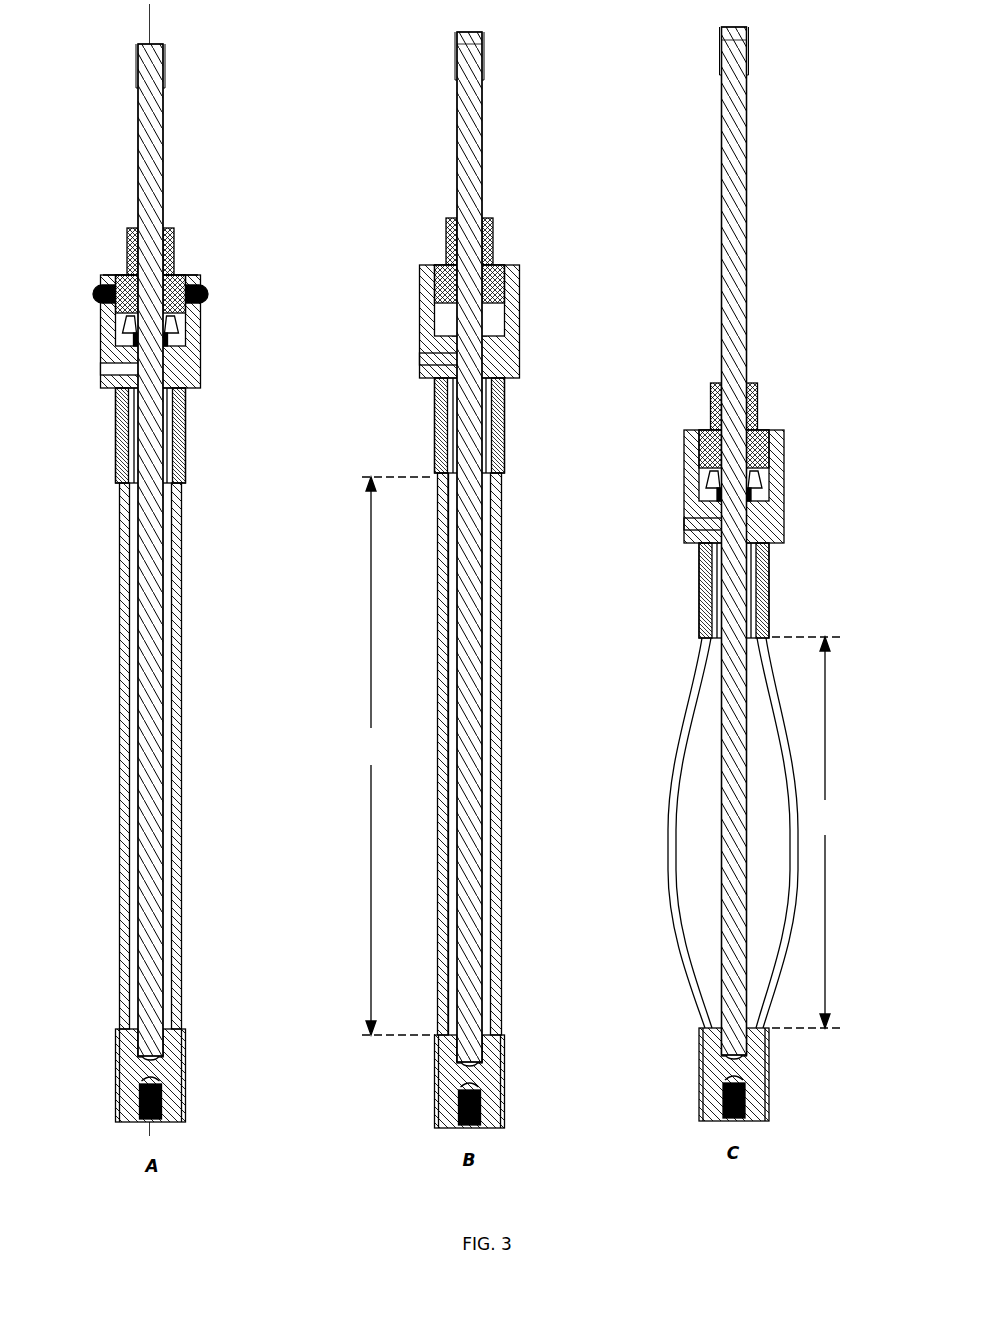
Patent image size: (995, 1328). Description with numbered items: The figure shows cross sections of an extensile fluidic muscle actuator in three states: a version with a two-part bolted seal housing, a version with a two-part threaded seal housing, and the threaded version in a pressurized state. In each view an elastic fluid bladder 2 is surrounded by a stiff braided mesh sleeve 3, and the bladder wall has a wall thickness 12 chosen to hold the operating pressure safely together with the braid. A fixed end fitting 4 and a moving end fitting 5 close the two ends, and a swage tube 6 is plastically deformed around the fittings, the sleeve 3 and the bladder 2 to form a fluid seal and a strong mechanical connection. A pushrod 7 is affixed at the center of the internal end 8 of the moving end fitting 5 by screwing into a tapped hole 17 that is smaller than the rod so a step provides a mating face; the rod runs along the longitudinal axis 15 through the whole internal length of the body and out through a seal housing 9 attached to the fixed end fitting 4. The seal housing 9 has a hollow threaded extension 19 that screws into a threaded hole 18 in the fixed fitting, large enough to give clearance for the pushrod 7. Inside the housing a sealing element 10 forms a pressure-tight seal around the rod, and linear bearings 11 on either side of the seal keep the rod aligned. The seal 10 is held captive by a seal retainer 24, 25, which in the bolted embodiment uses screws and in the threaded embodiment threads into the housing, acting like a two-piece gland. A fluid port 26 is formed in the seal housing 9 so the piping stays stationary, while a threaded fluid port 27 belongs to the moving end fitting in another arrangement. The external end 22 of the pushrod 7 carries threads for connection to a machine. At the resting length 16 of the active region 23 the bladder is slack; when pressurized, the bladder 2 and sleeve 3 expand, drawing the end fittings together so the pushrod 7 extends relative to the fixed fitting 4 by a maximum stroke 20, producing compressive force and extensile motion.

The elastic fluid bladder 2 is at (496, 722).
The braided mesh sleeve 3 is at (504, 650).
The fixed end fitting 4 is at (440, 442).
The moving end fitting 5 is at (455, 1078).
The swage tube 6 is at (187, 395).
The pushrod 7 is at (457, 152).
The internal end of moving fitting 8 is at (483, 1037).
The seal housing 9 is at (430, 343).
The sealing element 10 is at (175, 323).
The linear bearings 11 is at (103, 340).
The wall thickness 12 is at (678, 832).
The longitudinal axis 15 is at (152, 22).
The resting length 16 is at (395, 756).
The tapped hole 17 is at (160, 1042).
The threaded hole 18 is at (503, 402).
The hollow threaded extension of the seal housing 19 is at (440, 405).
The maximum stroke 20 is at (806, 832).
The external end of the pushrod 22 is at (733, 48).
The active region of the fluidic muscle 23 is at (192, 483).
The seal retainer 24 is at (193, 277).
The seal retainer 25 is at (420, 265).
The fluid port 26 is at (103, 370).
The threaded fluid port 27 is at (208, 288).